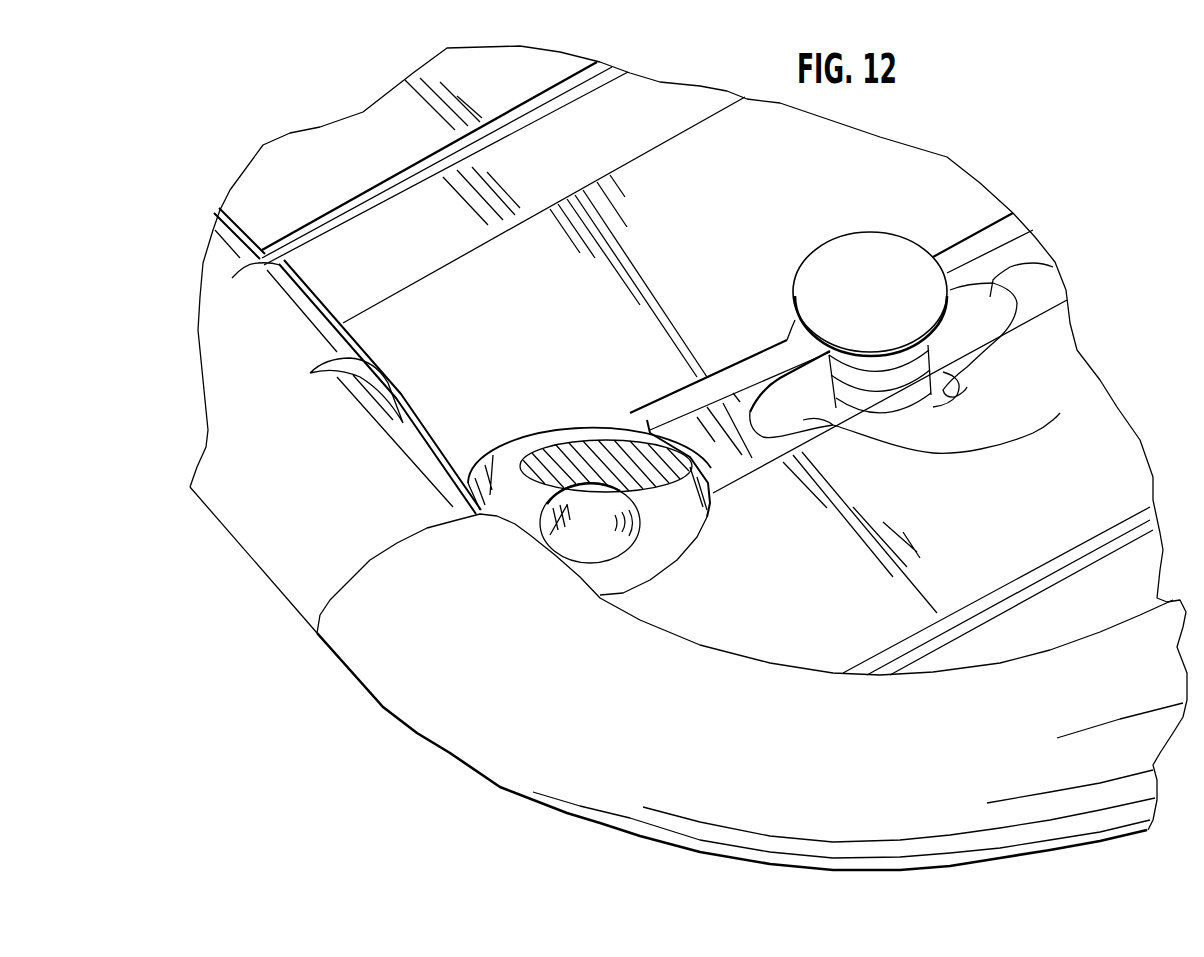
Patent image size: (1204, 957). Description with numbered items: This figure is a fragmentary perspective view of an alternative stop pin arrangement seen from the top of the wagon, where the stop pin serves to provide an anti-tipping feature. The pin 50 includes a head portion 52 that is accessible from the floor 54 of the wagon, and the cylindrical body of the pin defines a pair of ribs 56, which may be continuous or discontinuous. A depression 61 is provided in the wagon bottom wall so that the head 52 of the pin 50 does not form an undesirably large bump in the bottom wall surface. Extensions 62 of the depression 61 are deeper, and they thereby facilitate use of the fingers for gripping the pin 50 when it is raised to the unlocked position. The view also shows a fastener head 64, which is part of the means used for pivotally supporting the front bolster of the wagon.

The pin 50 is at (883, 215).
The head portion 52 is at (903, 253).
The floor 54 is at (558, 329).
The ribs 56 is at (917, 400).
The depression 61 is at (967, 367).
The extension 62 is at (1053, 267).
The fastener head 64 is at (522, 460).